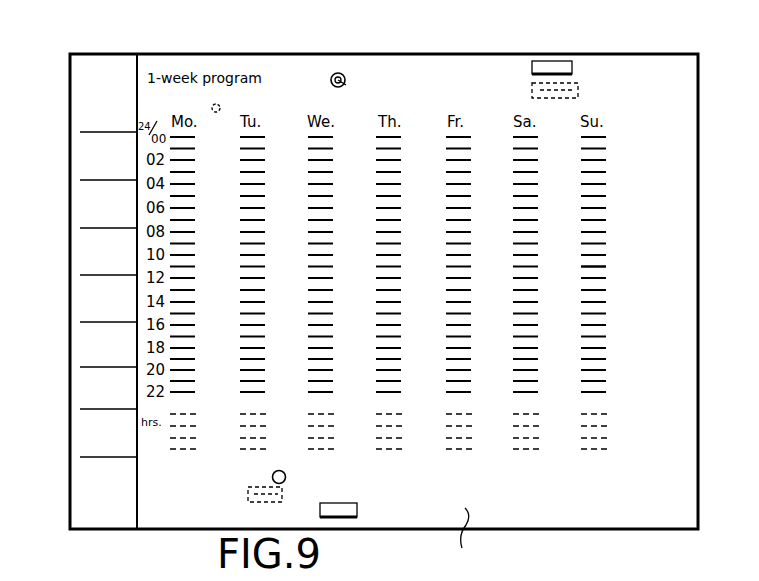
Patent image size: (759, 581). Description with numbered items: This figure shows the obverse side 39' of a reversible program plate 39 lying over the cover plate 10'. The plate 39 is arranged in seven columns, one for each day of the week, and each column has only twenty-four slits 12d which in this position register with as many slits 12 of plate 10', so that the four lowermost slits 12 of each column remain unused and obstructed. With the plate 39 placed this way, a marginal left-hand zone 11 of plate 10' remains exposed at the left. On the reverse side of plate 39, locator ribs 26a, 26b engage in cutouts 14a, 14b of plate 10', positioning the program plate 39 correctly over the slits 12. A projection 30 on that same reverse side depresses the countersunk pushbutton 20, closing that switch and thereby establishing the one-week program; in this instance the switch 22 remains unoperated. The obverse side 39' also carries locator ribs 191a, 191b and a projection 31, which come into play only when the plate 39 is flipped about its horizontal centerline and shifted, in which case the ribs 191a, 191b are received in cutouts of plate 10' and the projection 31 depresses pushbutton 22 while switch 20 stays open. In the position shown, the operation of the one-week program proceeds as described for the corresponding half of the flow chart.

The cover plate 10' is at (358, 291).
The marginal left-hand zone 11 is at (87, 246).
The slits 12 is at (598, 452).
The slits 12d is at (612, 282).
The cutout 14a is at (578, 96).
The cutout 14b is at (280, 501).
The locator rib 191a is at (345, 505).
The locator rib 191b is at (540, 71).
The countersunk pushbutton 20 is at (333, 70).
The switch 22 is at (216, 113).
The locator rib 26a is at (580, 88).
The locator rib 26b is at (246, 494).
The projection 30 is at (352, 80).
The projection 31 is at (287, 475).
The program plate 39 is at (112, 439).
The obverse side 39' is at (462, 537).